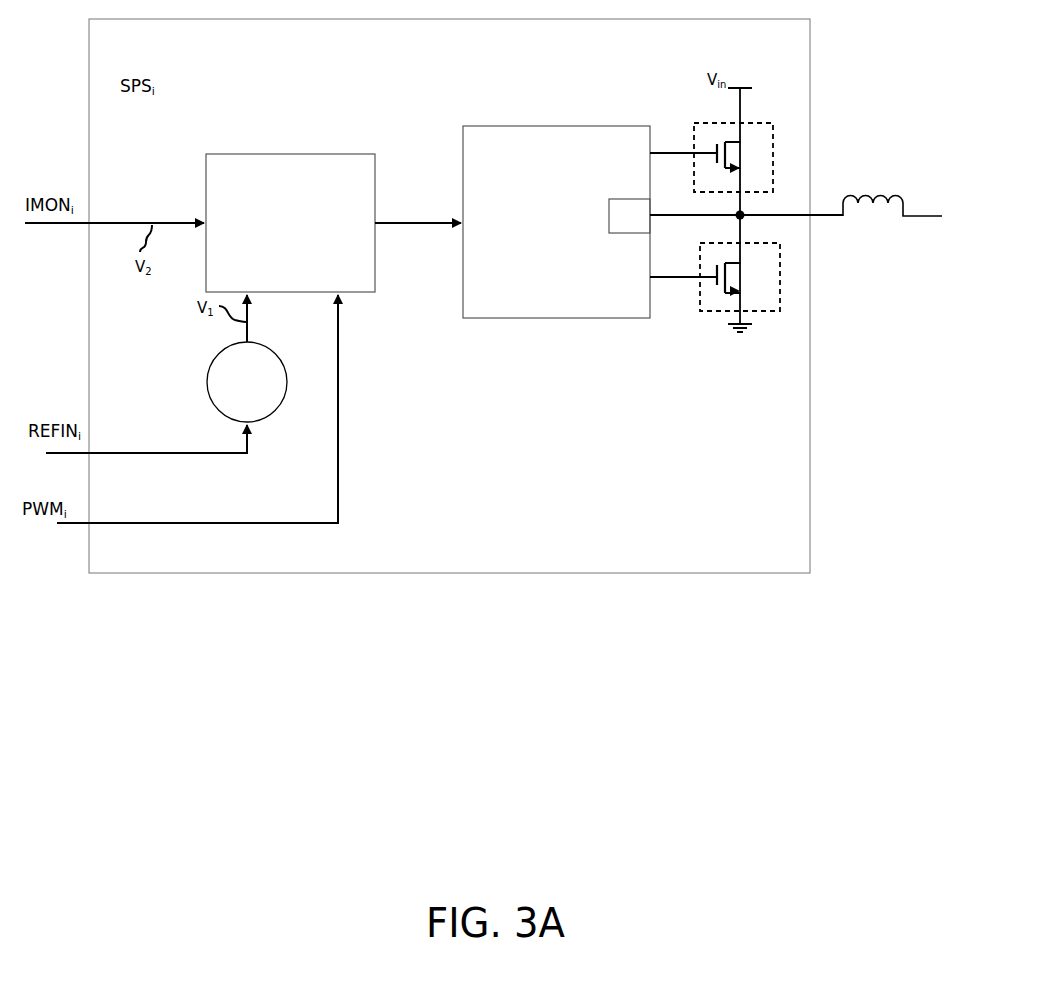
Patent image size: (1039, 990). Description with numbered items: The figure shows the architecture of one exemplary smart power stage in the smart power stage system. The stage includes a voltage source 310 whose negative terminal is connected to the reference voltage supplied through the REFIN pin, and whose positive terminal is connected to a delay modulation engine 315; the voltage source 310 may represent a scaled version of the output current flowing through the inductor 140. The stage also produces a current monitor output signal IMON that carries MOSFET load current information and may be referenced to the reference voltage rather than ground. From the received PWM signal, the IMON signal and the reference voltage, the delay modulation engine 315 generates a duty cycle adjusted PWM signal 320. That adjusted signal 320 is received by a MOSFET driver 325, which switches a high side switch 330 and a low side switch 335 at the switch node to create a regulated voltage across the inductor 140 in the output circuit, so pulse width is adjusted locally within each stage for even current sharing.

The voltage source 310 is at (207, 380).
The delay modulation engine 315 is at (290, 223).
The duty cycle adjusted PWM signal 320 is at (387, 223).
The MOSFET driver 325 is at (556, 222).
The high side switch 330 is at (694, 130).
The low side switch 335 is at (700, 268).
The inductor 140 is at (884, 194).